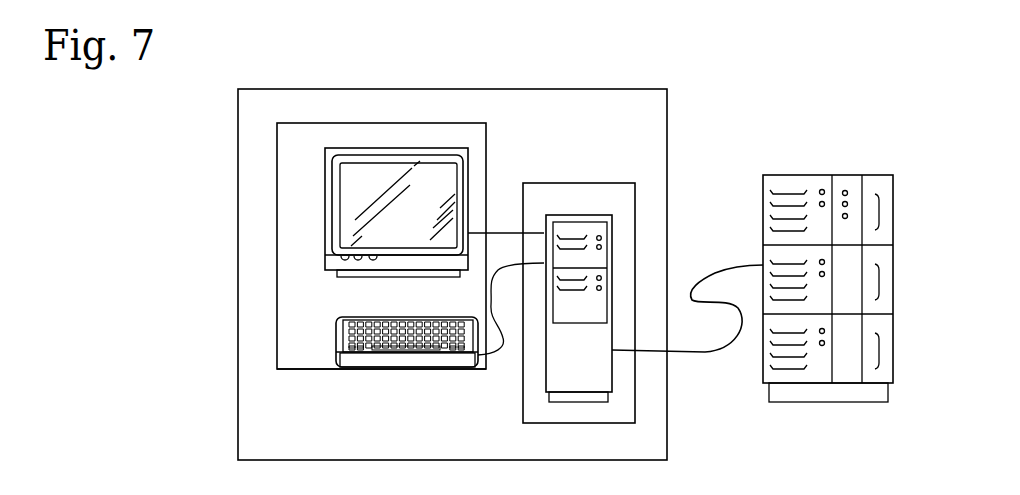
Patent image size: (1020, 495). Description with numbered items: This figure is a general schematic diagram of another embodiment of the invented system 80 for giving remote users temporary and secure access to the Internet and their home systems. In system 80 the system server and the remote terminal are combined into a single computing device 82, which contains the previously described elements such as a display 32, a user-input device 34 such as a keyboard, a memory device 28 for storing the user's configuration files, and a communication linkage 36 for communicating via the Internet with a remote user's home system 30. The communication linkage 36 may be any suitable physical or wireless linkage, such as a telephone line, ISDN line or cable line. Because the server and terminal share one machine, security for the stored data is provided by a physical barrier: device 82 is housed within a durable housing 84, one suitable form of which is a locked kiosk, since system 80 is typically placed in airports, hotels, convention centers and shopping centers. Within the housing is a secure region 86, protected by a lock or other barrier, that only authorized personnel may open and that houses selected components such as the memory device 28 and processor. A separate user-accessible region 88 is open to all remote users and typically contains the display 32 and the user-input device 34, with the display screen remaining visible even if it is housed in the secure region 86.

The system 80 is at (194, 160).
The computing device 82 is at (233, 140).
The housing 84 is at (238, 217).
The user-accessible region 88 is at (443, 372).
The display 32 is at (472, 153).
The user-input device 34 is at (375, 368).
The secure region 86 is at (563, 183).
The memory device 28 is at (542, 372).
The communication linkage 36 is at (692, 300).
The home system 30 is at (850, 175).